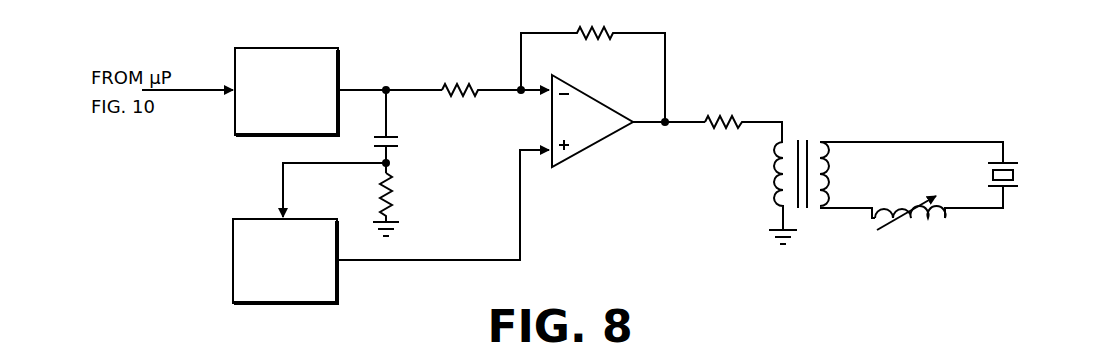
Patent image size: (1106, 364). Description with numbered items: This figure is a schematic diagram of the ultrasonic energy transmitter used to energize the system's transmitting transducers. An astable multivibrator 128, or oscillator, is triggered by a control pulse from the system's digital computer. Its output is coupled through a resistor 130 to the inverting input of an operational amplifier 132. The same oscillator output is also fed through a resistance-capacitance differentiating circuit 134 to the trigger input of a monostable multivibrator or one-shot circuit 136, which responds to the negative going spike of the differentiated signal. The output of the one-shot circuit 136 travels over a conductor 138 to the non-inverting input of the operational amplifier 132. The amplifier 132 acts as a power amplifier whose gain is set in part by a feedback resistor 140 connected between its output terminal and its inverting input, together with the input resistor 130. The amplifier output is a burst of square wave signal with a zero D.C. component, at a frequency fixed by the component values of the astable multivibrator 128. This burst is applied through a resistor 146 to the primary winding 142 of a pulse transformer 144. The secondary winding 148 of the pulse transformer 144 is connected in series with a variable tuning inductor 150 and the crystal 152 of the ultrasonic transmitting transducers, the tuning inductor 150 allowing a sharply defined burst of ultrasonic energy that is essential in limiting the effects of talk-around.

The astable multivibrator 128 is at (285, 48).
The resistor 130 is at (448, 86).
The operational amplifier 132 is at (595, 148).
The RC timing network 134 is at (420, 150).
The one-shot circuit 136 is at (280, 303).
The conductor 138 is at (520, 228).
The feedback resistor 140 is at (593, 33).
The primary winding 142 is at (774, 166).
The pulse transformer 144 is at (799, 170).
The resistor 146 is at (722, 117).
The secondary winding 148 is at (830, 168).
The variable tuning inductor 150 is at (910, 218).
The crystal 152 is at (1010, 163).